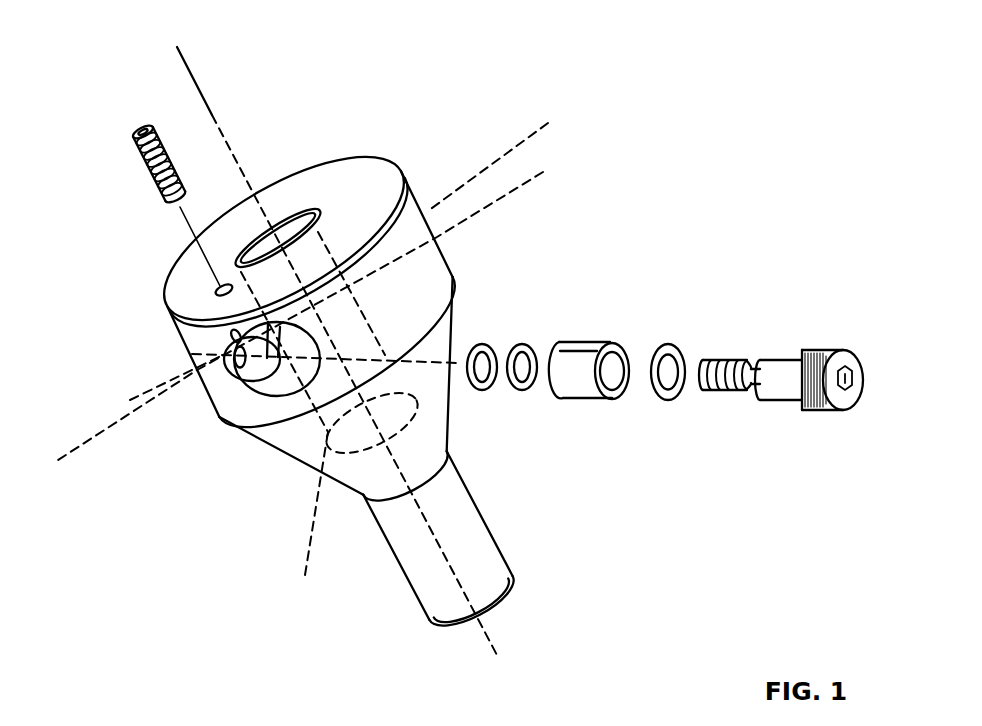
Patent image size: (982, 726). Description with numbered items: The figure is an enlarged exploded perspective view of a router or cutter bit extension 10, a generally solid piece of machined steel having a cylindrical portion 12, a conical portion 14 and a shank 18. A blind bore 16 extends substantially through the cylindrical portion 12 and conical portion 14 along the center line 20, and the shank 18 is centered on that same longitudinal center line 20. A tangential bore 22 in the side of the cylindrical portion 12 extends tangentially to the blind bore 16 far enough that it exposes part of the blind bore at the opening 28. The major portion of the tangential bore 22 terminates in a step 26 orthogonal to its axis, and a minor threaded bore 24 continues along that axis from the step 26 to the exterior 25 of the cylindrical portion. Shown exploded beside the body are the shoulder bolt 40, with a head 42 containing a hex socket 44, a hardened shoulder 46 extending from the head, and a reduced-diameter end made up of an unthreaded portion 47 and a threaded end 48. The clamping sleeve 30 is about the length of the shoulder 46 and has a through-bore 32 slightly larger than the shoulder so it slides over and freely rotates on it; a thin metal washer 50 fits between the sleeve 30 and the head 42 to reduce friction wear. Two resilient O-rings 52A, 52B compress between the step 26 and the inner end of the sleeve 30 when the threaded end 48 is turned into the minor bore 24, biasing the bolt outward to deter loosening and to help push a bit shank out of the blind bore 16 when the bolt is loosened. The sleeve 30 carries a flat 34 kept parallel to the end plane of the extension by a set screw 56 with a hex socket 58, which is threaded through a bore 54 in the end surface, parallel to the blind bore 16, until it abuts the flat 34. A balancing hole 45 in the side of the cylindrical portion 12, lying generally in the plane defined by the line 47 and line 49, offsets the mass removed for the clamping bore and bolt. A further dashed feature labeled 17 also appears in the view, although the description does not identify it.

The router or cutter bit extension 10 is at (420, 194).
The cylindrical portion 12 is at (433, 247).
The conical portion 14 is at (437, 343).
The blind bore 16 is at (302, 232).
The hidden bore line 17 is at (357, 493).
The shank 18 is at (480, 563).
The center line 20 is at (198, 80).
The tangential bore 22 is at (288, 378).
The minor threaded bore 24 is at (222, 415).
The exterior of cylindrical portion 25 is at (299, 317).
The step 26 is at (252, 372).
The opening into blind bore 28 is at (233, 333).
The clamping sleeve 30 is at (625, 337).
The through-bore 32 is at (615, 392).
The flat 34 is at (583, 347).
The shoulder bolt 40 is at (796, 389).
The head 42 is at (830, 352).
The hex socket 44 is at (847, 385).
The balancing hole 45 is at (509, 157).
The shoulder 46 is at (773, 405).
The unthreaded portion 47 is at (92, 443).
The threaded end 48 is at (729, 365).
The line 49 is at (410, 297).
The thin metal washer 50 is at (669, 399).
The O-ring 52A is at (522, 390).
The O-ring 52B is at (482, 389).
The threaded bore 54 is at (222, 289).
The set screw 56 is at (157, 167).
The hex socket 58 is at (141, 128).